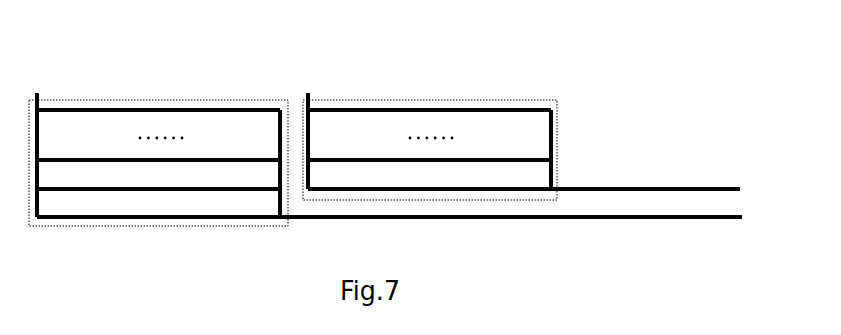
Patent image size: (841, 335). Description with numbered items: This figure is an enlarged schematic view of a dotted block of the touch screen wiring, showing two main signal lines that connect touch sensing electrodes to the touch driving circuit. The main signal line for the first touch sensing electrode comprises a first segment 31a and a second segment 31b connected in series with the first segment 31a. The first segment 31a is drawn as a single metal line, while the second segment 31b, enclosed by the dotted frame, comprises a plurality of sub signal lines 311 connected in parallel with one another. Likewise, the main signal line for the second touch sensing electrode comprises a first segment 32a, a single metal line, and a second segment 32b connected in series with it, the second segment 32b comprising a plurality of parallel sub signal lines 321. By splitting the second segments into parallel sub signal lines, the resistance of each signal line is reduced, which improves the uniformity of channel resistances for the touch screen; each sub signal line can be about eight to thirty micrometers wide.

The sub signal lines 311 is at (55, 160).
The first segment 31a is at (642, 215).
The second segment 31b is at (158, 100).
The sub signal lines 321 is at (325, 160).
The first segment 32a is at (583, 187).
The second segment 32b is at (430, 100).